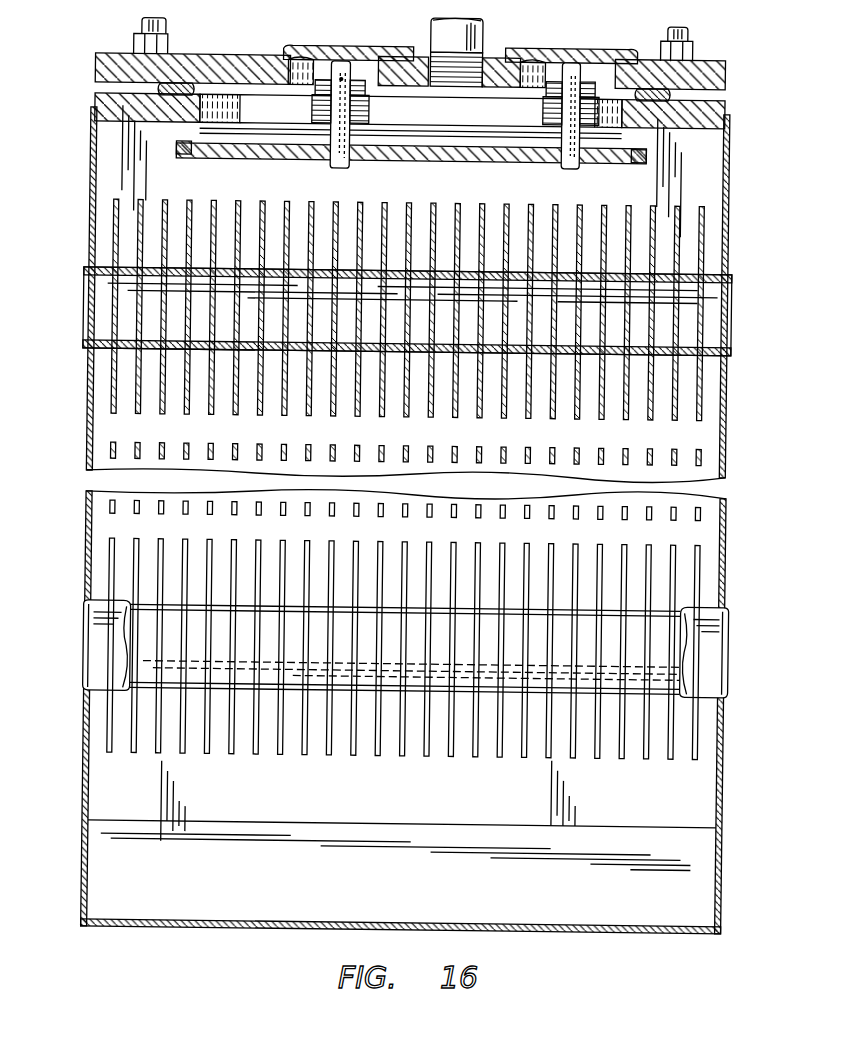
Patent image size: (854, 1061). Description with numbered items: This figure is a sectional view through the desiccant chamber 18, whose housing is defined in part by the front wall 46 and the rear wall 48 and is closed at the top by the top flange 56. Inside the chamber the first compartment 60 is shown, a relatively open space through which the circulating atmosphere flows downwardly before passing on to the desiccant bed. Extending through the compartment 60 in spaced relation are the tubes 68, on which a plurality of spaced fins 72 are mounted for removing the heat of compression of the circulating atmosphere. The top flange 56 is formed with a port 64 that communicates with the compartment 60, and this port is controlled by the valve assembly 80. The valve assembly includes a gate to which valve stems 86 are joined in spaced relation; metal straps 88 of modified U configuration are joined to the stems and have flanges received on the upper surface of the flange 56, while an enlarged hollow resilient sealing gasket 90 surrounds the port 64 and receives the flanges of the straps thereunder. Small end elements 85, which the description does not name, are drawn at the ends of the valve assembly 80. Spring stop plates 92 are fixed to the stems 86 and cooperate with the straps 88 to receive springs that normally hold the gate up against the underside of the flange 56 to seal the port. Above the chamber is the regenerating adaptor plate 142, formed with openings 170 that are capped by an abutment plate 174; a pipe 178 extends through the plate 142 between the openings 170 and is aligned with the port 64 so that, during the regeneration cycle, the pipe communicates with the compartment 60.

The desiccant chamber 18 is at (406, 519).
The front wall 46 is at (728, 157).
The rear wall 48 is at (90, 150).
The top flange 56 is at (720, 104).
The first compartment 60 is at (105, 172).
The port 64 is at (203, 106).
The tubes 68 is at (732, 269).
The fins 72 is at (706, 208).
The valve assembly 80 is at (430, 163).
The end block 85 is at (186, 141).
The valve stems 86 is at (330, 153).
The metal straps 88 is at (358, 122).
The resilient sealing gasket 90 is at (156, 88).
The spring stop plates 92 is at (444, 107).
The regenerating adaptor plate 142 is at (100, 60).
The openings 170 is at (296, 52).
The abutment plate 174 is at (312, 44).
The pipe 178 is at (483, 30).